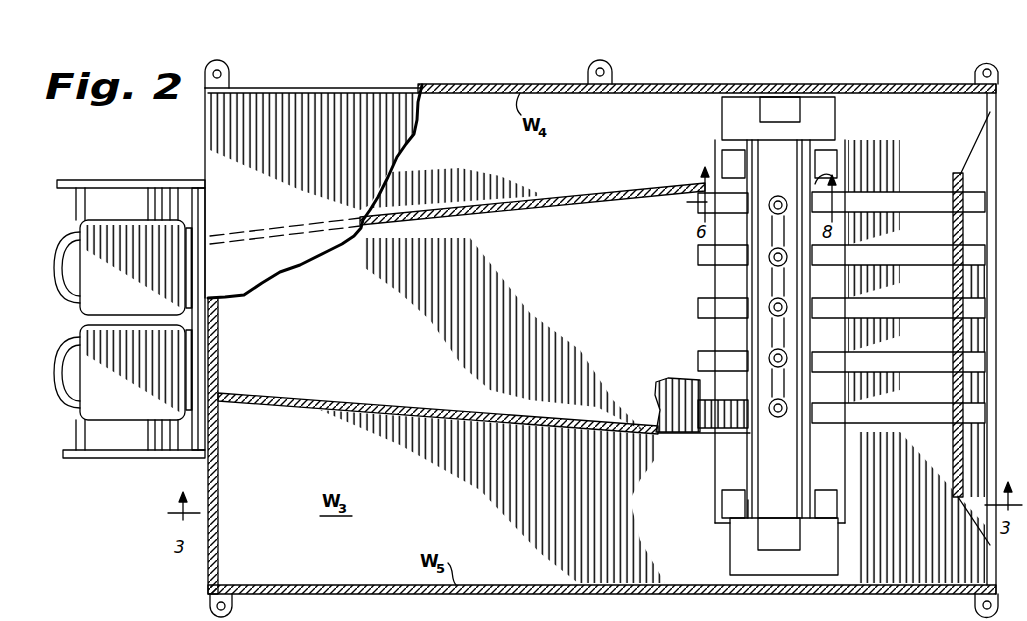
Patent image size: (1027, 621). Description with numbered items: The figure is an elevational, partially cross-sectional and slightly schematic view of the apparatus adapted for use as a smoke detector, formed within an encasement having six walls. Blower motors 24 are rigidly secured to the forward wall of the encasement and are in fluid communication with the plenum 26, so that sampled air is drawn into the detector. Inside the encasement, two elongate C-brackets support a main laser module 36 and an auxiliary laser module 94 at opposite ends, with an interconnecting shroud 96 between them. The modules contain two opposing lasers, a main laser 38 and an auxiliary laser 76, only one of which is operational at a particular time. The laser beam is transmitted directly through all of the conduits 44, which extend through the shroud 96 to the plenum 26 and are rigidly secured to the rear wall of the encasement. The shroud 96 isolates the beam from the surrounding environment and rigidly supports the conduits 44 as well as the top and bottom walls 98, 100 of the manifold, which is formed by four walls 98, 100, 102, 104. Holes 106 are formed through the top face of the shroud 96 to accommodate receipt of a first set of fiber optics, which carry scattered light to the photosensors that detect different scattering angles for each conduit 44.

The blower motors 24 is at (126, 460).
The plenum 26 is at (588, 291).
The main laser module 36 is at (838, 116).
The main laser 38 is at (755, 102).
The conduits 44 is at (880, 424).
The auxiliary laser 76 is at (755, 536).
The auxiliary laser module 94 is at (740, 550).
The shroud 96 is at (813, 494).
The top wall of manifold 98 is at (674, 384).
The bottom wall of manifold 100 is at (356, 330).
The manifold wall 102 is at (598, 195).
The manifold wall 104 is at (350, 382).
The holes 106 is at (768, 260).